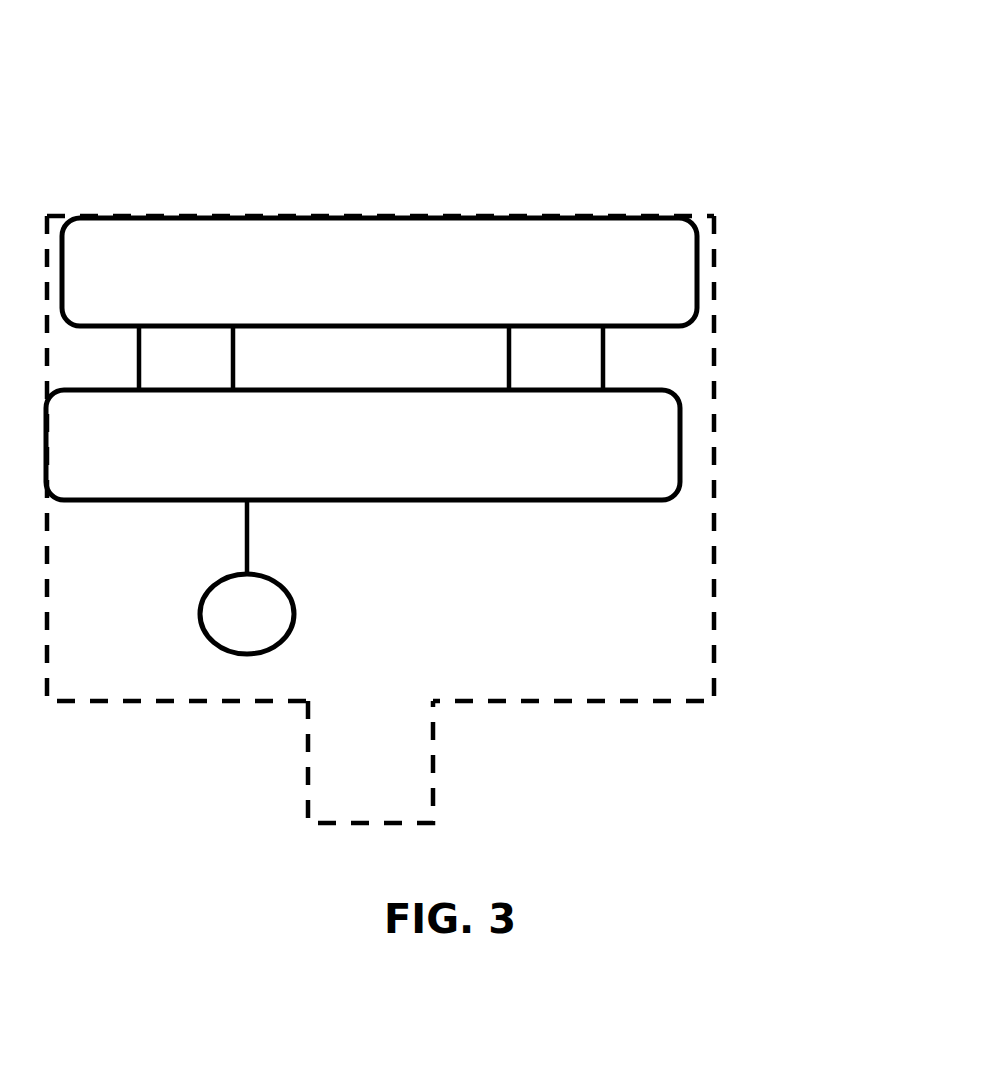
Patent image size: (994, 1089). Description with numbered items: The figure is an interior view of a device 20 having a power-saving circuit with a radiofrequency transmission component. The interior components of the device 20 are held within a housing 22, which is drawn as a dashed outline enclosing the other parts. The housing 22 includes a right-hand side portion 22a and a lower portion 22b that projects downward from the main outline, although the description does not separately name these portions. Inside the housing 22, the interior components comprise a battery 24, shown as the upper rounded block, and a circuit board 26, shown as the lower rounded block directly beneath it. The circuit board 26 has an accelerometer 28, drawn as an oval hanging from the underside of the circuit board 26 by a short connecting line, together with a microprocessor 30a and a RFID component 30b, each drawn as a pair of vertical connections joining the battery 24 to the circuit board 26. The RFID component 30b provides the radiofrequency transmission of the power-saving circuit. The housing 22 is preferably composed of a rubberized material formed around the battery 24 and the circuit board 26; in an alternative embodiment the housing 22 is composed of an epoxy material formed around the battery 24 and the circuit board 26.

The device 20 is at (594, 84).
The housing 22 is at (49, 215).
The housing side wall 22a is at (712, 387).
The housing protrusion 22b is at (308, 777).
The battery 24 is at (379, 272).
The circuit board 26 is at (363, 445).
The accelerometer 28 is at (247, 577).
The microprocessor 30a is at (186, 358).
The RFID component 30b is at (556, 358).